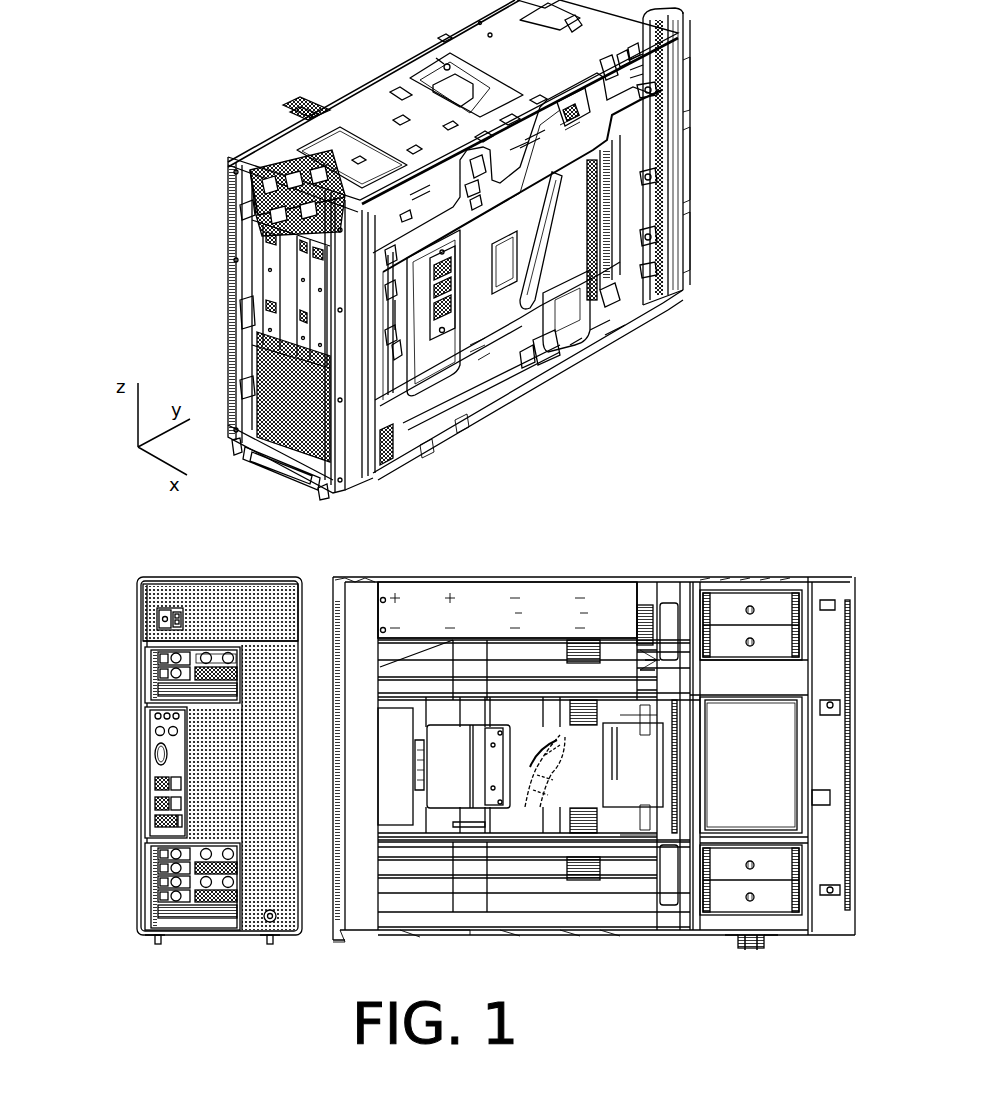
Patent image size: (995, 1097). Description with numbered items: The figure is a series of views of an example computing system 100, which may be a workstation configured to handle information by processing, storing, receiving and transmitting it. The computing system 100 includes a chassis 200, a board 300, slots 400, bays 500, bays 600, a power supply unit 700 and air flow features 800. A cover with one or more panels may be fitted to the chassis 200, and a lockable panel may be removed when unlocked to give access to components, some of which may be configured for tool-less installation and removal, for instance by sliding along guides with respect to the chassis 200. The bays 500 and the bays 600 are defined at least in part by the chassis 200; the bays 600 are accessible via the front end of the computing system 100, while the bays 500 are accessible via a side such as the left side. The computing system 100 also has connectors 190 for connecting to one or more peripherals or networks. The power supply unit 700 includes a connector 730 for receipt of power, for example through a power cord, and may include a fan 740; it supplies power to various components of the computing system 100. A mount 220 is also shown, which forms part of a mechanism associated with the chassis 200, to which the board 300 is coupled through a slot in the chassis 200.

The computing system 100 is at (302, 45).
The bays 600 is at (234, 300).
The chassis 200 is at (578, 390).
The mount 220 is at (456, 362).
The connector 730 is at (160, 608).
The fan 740 is at (223, 603).
The slots 400 is at (135, 685).
The connectors 190 is at (134, 776).
The power supply unit 700 is at (408, 598).
The air flow features 800 is at (512, 710).
The bays 500 is at (755, 572).
The board 300 is at (530, 766).